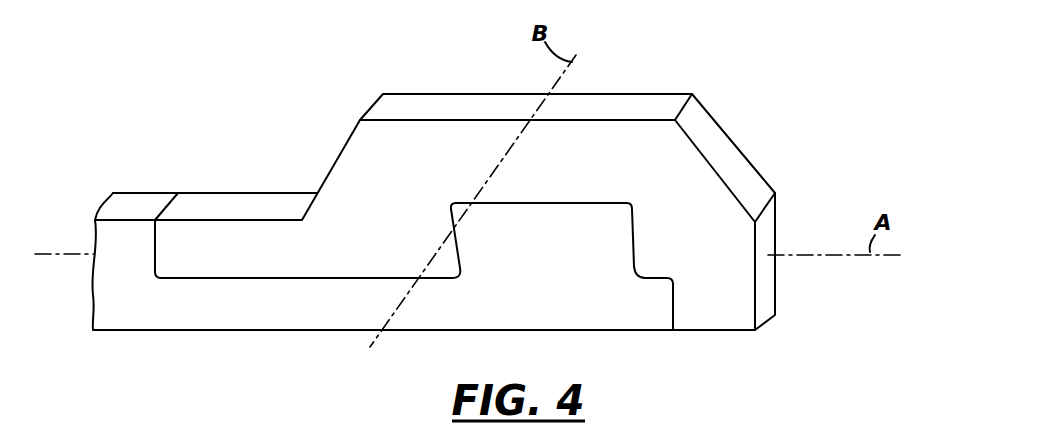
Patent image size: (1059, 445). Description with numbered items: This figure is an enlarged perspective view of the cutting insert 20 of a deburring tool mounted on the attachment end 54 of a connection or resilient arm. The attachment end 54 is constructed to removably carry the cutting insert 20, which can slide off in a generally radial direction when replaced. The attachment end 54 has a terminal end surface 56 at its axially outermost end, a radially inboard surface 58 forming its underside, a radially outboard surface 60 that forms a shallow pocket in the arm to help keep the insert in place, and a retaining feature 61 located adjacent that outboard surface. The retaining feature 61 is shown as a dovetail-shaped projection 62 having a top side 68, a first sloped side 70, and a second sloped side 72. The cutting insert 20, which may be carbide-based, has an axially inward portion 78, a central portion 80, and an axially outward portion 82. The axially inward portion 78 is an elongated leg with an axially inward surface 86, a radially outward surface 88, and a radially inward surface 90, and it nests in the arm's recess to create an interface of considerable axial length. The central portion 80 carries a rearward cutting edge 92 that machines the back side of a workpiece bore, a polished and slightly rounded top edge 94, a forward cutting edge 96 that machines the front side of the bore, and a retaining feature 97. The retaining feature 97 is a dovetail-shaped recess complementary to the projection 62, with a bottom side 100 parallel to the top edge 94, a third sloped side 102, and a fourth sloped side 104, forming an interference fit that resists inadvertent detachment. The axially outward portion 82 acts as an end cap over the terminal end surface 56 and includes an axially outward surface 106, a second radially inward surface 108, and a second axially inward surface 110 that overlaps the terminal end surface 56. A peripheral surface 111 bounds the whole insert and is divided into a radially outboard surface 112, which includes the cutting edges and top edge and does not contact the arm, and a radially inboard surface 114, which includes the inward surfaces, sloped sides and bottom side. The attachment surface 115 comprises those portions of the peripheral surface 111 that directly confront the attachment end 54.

The cutting insert 20 is at (657, 57).
The attachment end 54 is at (325, 317).
The terminal end surface 56 is at (674, 293).
The radially inboard surface 58 is at (492, 333).
The radially outboard surface 60 is at (251, 278).
The retaining feature 61 is at (617, 193).
The dovetail-shaped projection 62 is at (460, 213).
The top side 68 is at (557, 202).
The first sloped side 70 is at (453, 246).
The second sloped side 72 is at (642, 283).
The axially inward portion 78 is at (202, 255).
The central portion 80 is at (433, 138).
The axially outward portion 82 is at (722, 275).
The axially inward surface 86 is at (152, 254).
The radially outward surface 88 is at (215, 201).
The radially inward surface 90 is at (173, 280).
The rearward cutting edge 92 is at (351, 136).
The top edge 94 is at (552, 108).
The forward cutting edge 96 is at (732, 160).
The retaining feature 97 is at (564, 207).
The bottom side 100 is at (532, 204).
The third sloped side 102 is at (460, 252).
The fourth sloped side 104 is at (620, 228).
The axially outward surface 106 is at (768, 245).
The second radially inward surface 108 is at (730, 332).
The second axially inward surface 110 is at (672, 313).
The peripheral surface 111 is at (503, 99).
The radially outboard surface 112 is at (413, 100).
The radially inboard surface 114 is at (277, 280).
The attachment surface 115 is at (382, 282).